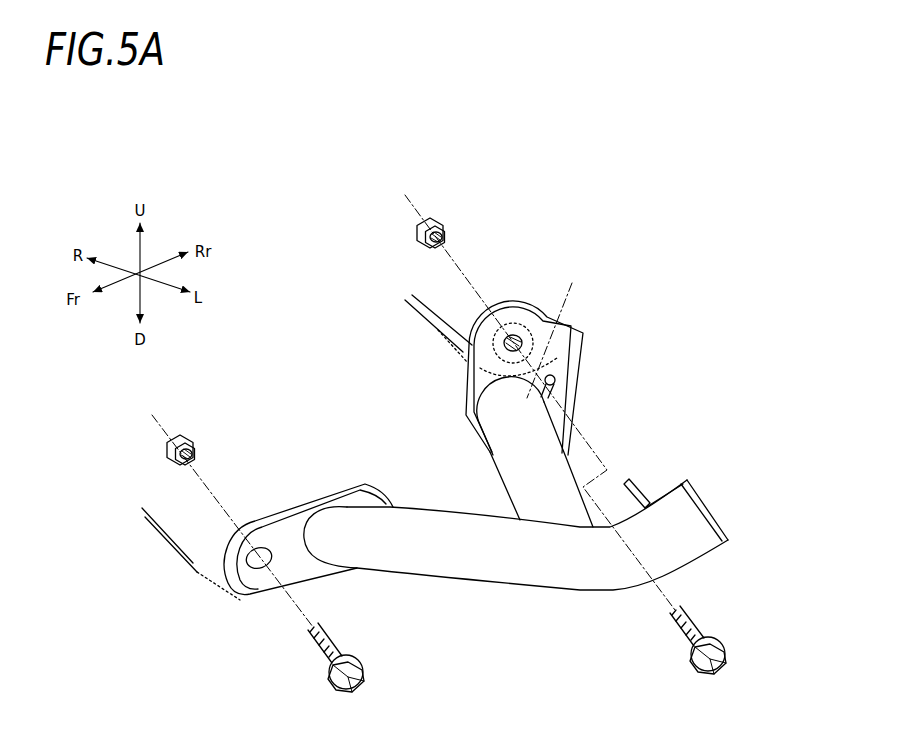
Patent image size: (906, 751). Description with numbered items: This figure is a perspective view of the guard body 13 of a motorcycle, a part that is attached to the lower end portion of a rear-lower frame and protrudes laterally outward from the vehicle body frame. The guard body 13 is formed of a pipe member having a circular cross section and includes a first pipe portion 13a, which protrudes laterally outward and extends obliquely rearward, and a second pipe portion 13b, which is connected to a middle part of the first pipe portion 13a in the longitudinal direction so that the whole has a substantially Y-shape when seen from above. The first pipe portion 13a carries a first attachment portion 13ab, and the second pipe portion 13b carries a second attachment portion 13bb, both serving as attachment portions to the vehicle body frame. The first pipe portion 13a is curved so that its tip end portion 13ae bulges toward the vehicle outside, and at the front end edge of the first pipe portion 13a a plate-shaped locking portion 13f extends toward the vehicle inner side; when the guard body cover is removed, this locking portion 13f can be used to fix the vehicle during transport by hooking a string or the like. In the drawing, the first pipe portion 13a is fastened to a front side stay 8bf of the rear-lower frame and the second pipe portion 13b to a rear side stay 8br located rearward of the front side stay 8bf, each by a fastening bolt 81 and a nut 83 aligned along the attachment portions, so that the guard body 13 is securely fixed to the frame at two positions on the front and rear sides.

The guard body 13 is at (493, 464).
The first pipe portion 13a is at (493, 539).
The first attachment portion 13ab is at (275, 533).
The tip end portion 13ae is at (682, 535).
The second pipe portion 13b is at (573, 414).
The second attachment portion 13bb is at (535, 350).
The locking portion 13f is at (637, 485).
The fastening bolt 81 is at (355, 682).
The nut 83 is at (442, 216).
The rear side stay 8br is at (447, 307).
The front side stay 8bf is at (197, 533).